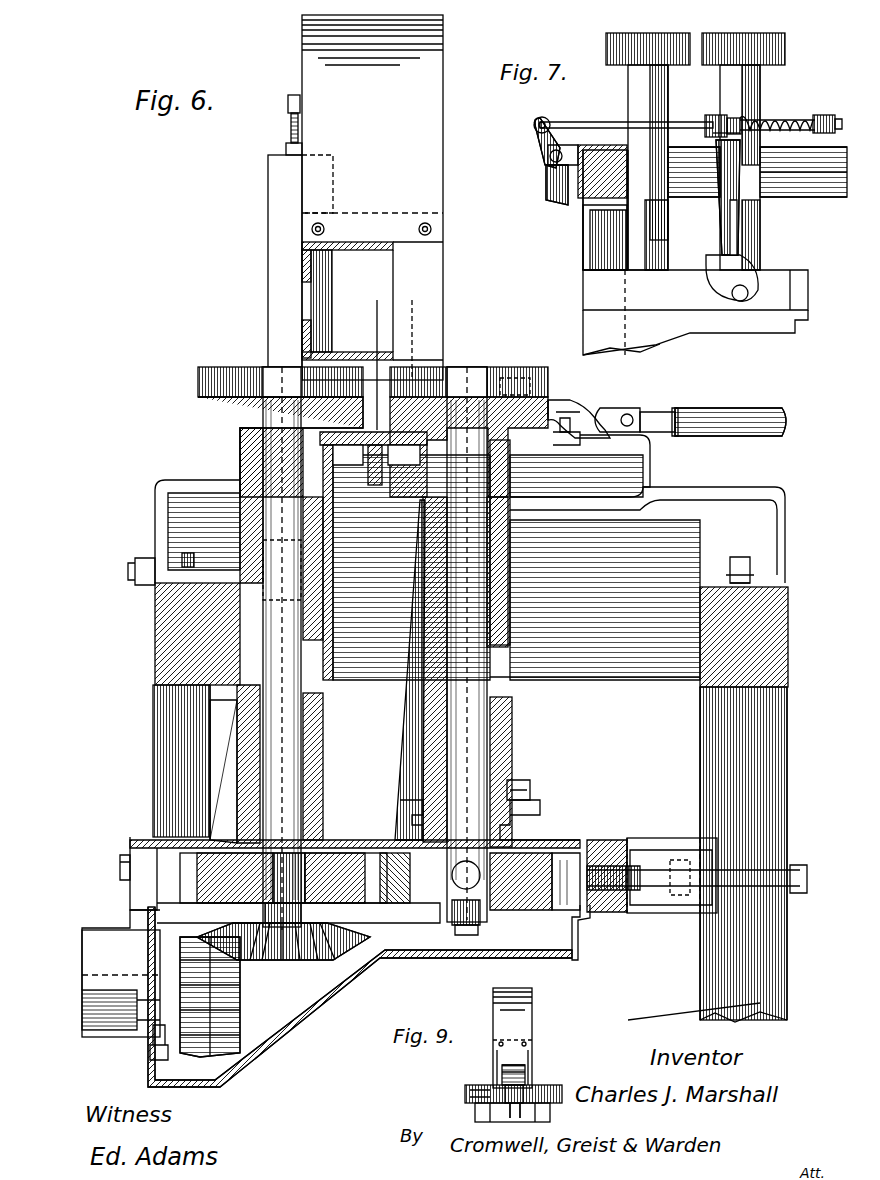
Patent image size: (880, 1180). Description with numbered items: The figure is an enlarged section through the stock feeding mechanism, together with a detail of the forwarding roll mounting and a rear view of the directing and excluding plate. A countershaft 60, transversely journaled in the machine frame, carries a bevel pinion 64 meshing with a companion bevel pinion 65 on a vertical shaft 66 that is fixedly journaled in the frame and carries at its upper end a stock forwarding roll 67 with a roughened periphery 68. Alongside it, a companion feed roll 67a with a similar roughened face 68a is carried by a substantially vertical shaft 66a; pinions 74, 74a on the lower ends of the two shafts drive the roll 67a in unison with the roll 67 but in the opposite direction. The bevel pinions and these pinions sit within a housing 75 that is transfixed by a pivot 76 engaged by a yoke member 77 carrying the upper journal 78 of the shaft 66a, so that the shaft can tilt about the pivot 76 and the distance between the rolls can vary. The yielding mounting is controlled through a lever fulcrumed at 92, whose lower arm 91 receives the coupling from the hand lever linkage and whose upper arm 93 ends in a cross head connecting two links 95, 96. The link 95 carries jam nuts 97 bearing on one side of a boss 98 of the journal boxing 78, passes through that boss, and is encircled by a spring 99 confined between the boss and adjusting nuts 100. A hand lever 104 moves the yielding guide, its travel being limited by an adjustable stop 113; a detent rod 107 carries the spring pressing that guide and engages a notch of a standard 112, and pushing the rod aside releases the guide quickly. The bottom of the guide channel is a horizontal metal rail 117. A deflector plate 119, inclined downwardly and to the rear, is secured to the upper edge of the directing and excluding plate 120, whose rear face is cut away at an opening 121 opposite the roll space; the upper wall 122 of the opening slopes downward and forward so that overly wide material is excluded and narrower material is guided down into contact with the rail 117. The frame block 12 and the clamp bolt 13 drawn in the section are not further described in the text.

In FIG. 7, the housing block 12 is at (583, 198).
In FIG. 6, the clamp bolt 13 is at (660, 653).
In FIG. 6, the countershaft 60 is at (233, 1000).
In FIG. 6, the bevel pinion 64 is at (240, 1030).
In FIG. 6, the companion bevel pinion 65 is at (325, 960).
In FIG. 6, the vertical shaft 66 is at (303, 683).
In FIG. 7, the vertical shaft 66 is at (655, 85).
In FIG. 6, the substantially vertical shaft 66a is at (487, 680).
In FIG. 7, the substantially vertical shaft 66a is at (750, 80).
In FIG. 6, the stock forwarding roll 67 is at (205, 425).
In FIG. 7, the stock forwarding roll 67 is at (615, 53).
In FIG. 9, the stock forwarding roll 67 is at (465, 1093).
In FIG. 6, the feed roll 67a is at (553, 388).
In FIG. 7, the feed roll 67a is at (778, 58).
In FIG. 9, the feed roll 67a is at (560, 1085).
In FIG. 6, the roughened periphery 68 is at (198, 392).
In FIG. 6, the roughened face 68a is at (548, 368).
In FIG. 6, the pinion 74 is at (352, 855).
In FIG. 6, the companion pinion 74a is at (555, 860).
In FIG. 6, the housing 75 is at (452, 957).
In FIG. 7, the housing 75 is at (688, 322).
In FIG. 6, the pivot 76 is at (450, 905).
In FIG. 7, the pivot 76 is at (743, 301).
In FIG. 6, the yoke member 77 is at (405, 735).
In FIG. 7, the yoke member 77 is at (712, 250).
In FIG. 6, the upper journal 78 is at (515, 553).
In FIG. 7, the upper journal 78 is at (757, 108).
In FIG. 7, the lever arm 91 is at (548, 195).
In FIG. 7, the fulcrum 92 is at (548, 163).
In FIG. 7, the upper lever arm 93 is at (535, 128).
In FIG. 7, the link 95 is at (605, 118).
In FIG. 7, the link 96 is at (548, 112).
In FIG. 7, the jam nuts 97 is at (712, 115).
In FIG. 7, the boss 98 is at (713, 135).
In FIG. 7, the spring 99 is at (808, 110).
In FIG. 7, the adjusting nuts 100 is at (830, 135).
In FIG. 6, the hand lever 104 is at (785, 395).
In FIG. 6, the detent rod 107 is at (588, 395).
In FIG. 6, the standard 112 is at (618, 408).
In FIG. 6, the adjustable stop 113 is at (645, 448).
In FIG. 6, the metal rail 117 is at (377, 360).
In FIG. 9, the metal rail 117 is at (513, 1118).
In FIG. 6, the deflector plate 119 is at (430, 48).
In FIG. 9, the deflector plate 119 is at (520, 1010).
In FIG. 6, the directing and excluding plate 120 is at (268, 305).
In FIG. 9, the directing and excluding plate 120 is at (495, 1050).
In FIG. 9, the opening 121 is at (500, 1070).
In FIG. 9, the inclined wall 122 is at (520, 1062).